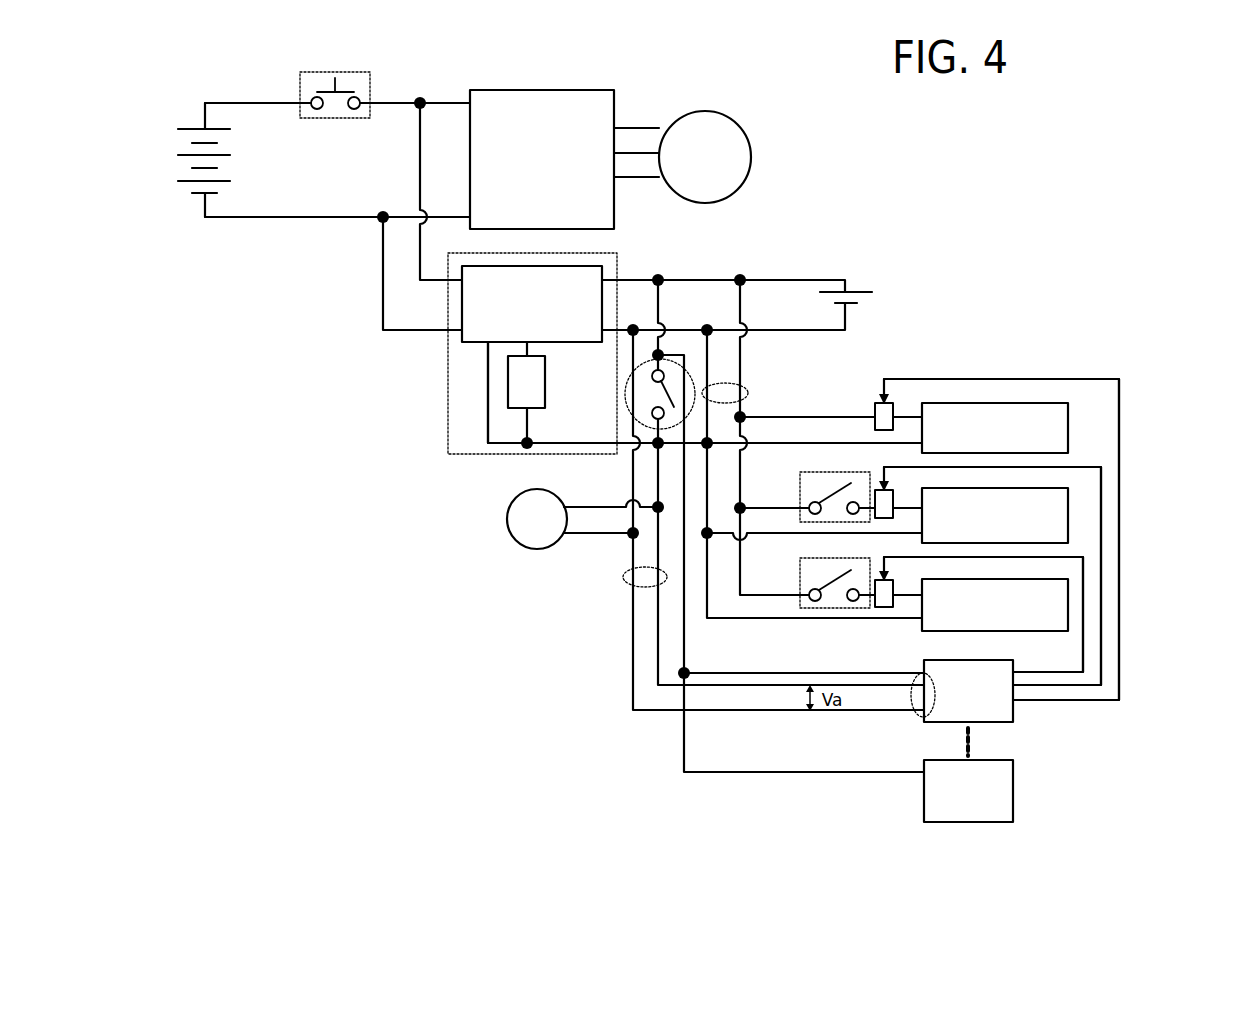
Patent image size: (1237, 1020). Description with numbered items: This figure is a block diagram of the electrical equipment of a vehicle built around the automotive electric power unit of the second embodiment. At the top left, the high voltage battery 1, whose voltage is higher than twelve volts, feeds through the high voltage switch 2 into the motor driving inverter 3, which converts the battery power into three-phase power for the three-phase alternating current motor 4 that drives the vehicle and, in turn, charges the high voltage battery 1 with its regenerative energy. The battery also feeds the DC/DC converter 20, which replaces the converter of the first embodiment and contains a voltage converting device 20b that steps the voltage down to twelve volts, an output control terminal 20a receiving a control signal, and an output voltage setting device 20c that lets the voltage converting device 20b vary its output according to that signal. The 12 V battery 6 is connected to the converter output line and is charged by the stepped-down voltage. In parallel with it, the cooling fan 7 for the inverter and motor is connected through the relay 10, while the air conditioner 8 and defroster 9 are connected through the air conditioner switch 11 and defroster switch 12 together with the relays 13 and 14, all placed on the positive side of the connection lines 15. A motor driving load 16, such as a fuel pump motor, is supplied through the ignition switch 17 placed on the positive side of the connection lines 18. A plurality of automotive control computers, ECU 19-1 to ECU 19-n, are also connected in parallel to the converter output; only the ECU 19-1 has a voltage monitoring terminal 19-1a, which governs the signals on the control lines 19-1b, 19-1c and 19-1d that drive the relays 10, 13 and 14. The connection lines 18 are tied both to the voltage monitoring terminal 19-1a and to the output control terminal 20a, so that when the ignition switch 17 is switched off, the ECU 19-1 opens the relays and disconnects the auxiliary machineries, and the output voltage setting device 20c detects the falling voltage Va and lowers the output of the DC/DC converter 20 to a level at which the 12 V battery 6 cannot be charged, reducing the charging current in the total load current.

The high voltage battery 1 is at (195, 129).
The high voltage switch 2 is at (372, 88).
The motor driving inverter 3 is at (614, 108).
The three-phase alternating current motor 4 is at (737, 122).
The 12 V battery 6 is at (862, 292).
The cooling fan 7 is at (1068, 420).
The air conditioner 8 is at (1068, 500).
The defroster 9 is at (1068, 590).
The relay 10 is at (878, 432).
The air conditioner switch 11 is at (801, 485).
The defroster switch 12 is at (801, 577).
The relay 13 is at (878, 520).
The relay 14 is at (881, 608).
The connection lines 15 is at (748, 388).
The motor driving load 16 is at (509, 535).
The ignition switch 17 is at (672, 350).
The connection lines 18 is at (622, 586).
The ECU 19-1 is at (1015, 705).
The ECU 19-n is at (1015, 790).
The voltage monitoring terminal 19-1a is at (912, 708).
The control line 19-1b is at (1119, 432).
The control line 19-1c is at (1101, 532).
The control line 19-1d is at (1083, 655).
The DC/DC converter 20 is at (617, 253).
The output control terminal 20a is at (616, 452).
The voltage converting device 20b is at (467, 344).
The output voltage setting device 20c is at (517, 409).